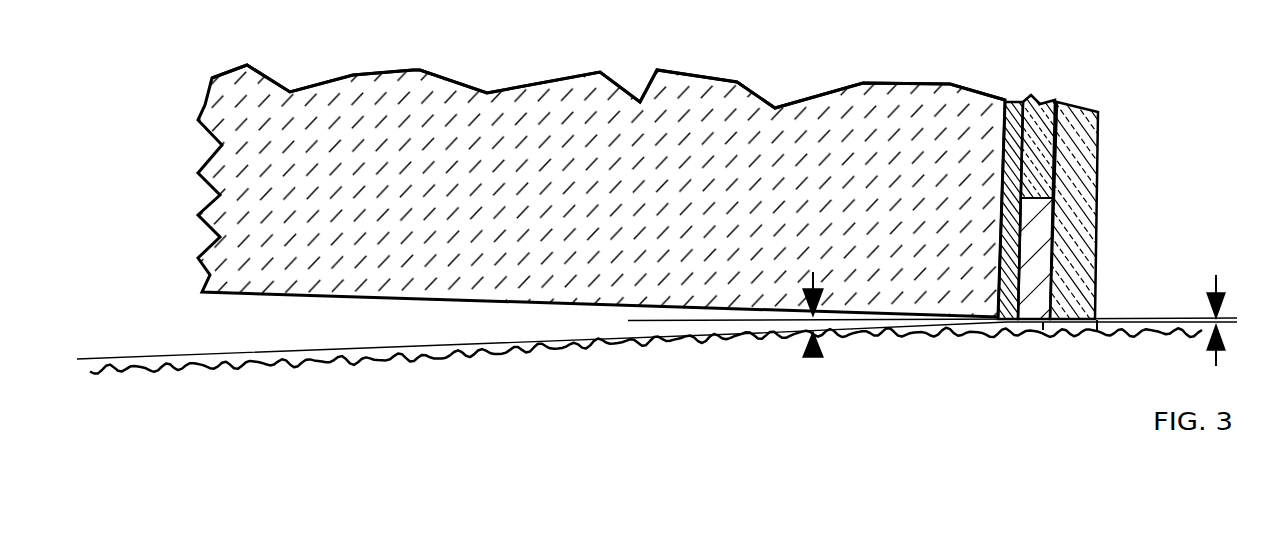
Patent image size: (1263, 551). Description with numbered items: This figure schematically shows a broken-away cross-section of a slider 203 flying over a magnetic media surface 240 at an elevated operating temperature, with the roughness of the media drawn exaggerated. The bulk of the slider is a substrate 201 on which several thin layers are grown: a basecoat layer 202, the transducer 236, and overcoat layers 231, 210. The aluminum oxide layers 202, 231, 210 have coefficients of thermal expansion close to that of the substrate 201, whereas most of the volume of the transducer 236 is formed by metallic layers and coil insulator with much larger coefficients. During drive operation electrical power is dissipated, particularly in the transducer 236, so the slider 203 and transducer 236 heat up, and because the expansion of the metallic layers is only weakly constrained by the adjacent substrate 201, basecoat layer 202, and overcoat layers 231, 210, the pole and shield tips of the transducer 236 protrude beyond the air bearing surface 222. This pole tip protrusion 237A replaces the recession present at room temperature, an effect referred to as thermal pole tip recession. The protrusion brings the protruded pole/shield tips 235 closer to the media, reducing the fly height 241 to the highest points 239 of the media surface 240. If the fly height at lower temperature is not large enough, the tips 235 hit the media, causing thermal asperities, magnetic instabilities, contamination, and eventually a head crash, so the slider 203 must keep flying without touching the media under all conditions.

The substrate 201 is at (630, 216).
The basecoat layer 202 is at (1021, 100).
The slider 203 is at (510, 24).
The overcoat layer 210 is at (1093, 112).
The air bearing surface 222 is at (921, 319).
The overcoat layer 231 is at (1043, 99).
The protruded pole/shield tips 235 is at (1097, 325).
The transducer 236 is at (1043, 325).
The pole tip protrusion 237A is at (1228, 333).
The highest points 239 is at (355, 320).
The magnetic media surface 240 is at (799, 340).
The fly height 241 is at (813, 355).